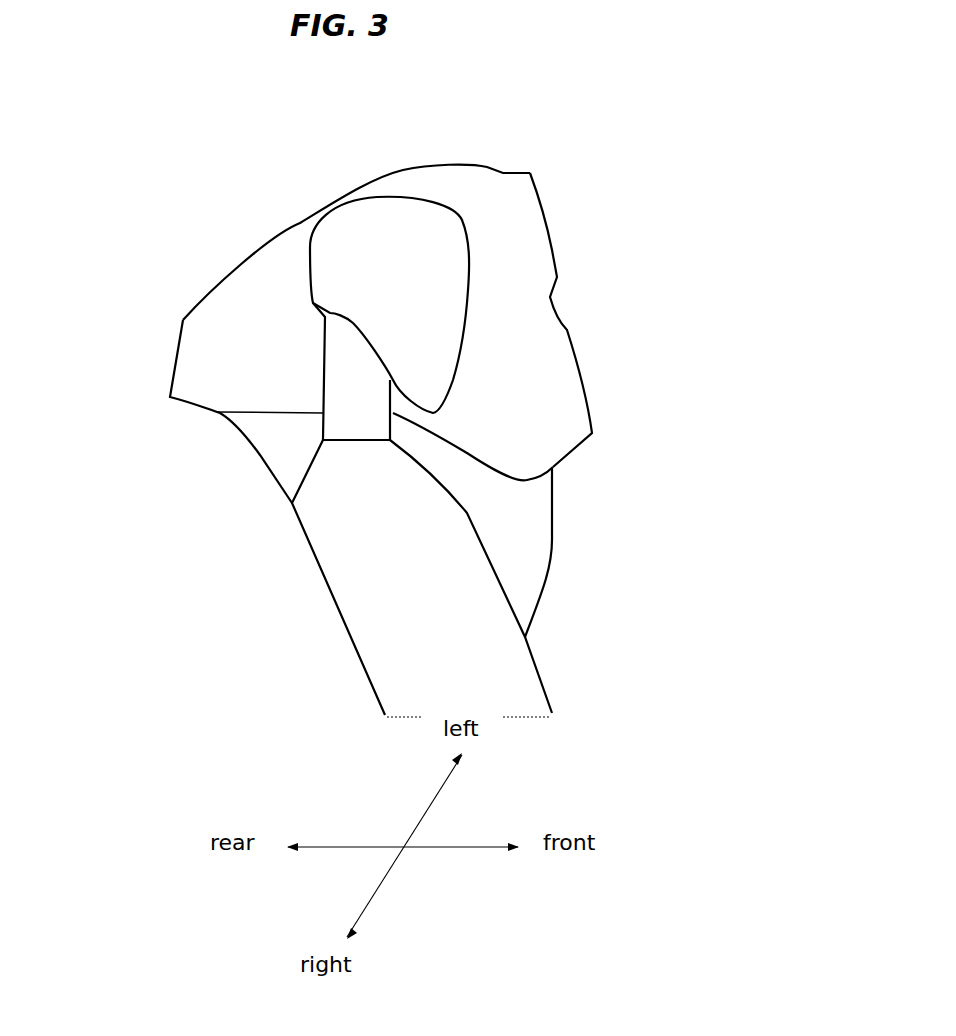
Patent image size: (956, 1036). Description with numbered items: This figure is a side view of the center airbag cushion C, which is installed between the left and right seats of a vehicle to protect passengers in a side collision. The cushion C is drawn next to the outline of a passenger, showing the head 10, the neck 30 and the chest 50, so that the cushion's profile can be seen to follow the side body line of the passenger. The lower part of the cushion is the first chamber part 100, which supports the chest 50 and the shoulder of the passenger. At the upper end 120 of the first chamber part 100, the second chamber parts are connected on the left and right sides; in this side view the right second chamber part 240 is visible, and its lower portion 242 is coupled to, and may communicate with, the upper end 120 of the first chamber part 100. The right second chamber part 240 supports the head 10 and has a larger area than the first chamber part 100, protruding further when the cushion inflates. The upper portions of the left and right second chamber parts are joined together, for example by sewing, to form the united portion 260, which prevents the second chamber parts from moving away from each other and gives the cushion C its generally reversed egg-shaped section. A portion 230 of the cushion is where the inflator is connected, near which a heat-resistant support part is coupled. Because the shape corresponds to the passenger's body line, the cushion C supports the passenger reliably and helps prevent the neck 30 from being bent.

The head 10 is at (313, 237).
The neck 30 is at (287, 412).
The chest 50 is at (357, 605).
The first chamber part 100 is at (517, 597).
The upper end of the first chamber part 120 is at (552, 468).
The portion to which the inflator is connected 230 is at (177, 358).
The right second chamber part 240 is at (533, 263).
The lower portion of the right second chamber part 242 is at (460, 420).
The united portion 260 is at (477, 197).
The center airbag cushion C is at (183, 512).